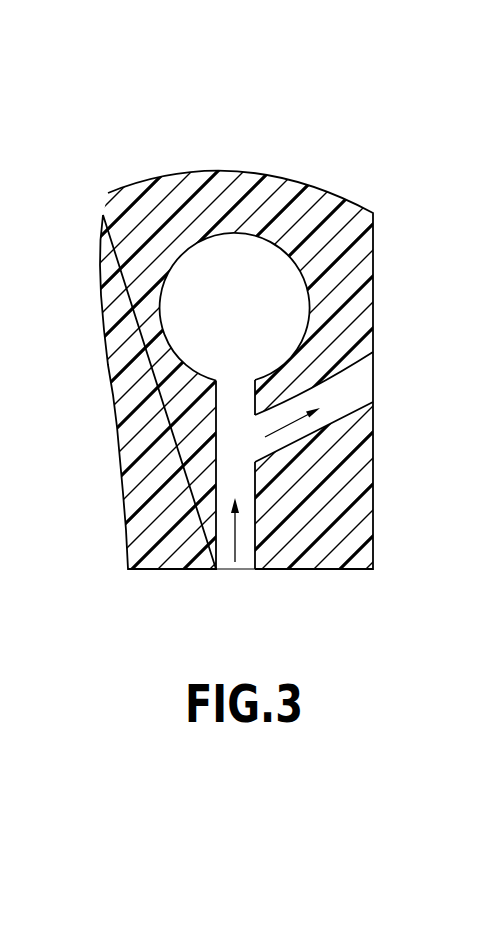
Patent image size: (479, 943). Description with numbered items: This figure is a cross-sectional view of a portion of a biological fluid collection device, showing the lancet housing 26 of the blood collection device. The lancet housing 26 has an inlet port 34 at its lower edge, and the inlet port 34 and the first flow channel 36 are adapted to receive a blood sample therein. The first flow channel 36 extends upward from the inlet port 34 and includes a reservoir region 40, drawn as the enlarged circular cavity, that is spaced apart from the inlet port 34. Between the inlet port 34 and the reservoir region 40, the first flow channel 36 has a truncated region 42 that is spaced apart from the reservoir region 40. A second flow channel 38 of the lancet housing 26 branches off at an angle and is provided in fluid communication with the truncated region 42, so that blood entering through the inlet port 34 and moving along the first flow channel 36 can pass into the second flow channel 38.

The lancet housing 26 is at (112, 135).
The reservoir region 40 is at (240, 273).
The first flow channel 36 is at (223, 426).
The second flow channel 38 is at (345, 392).
The truncated region 42 is at (225, 497).
The inlet port 34 is at (229, 587).